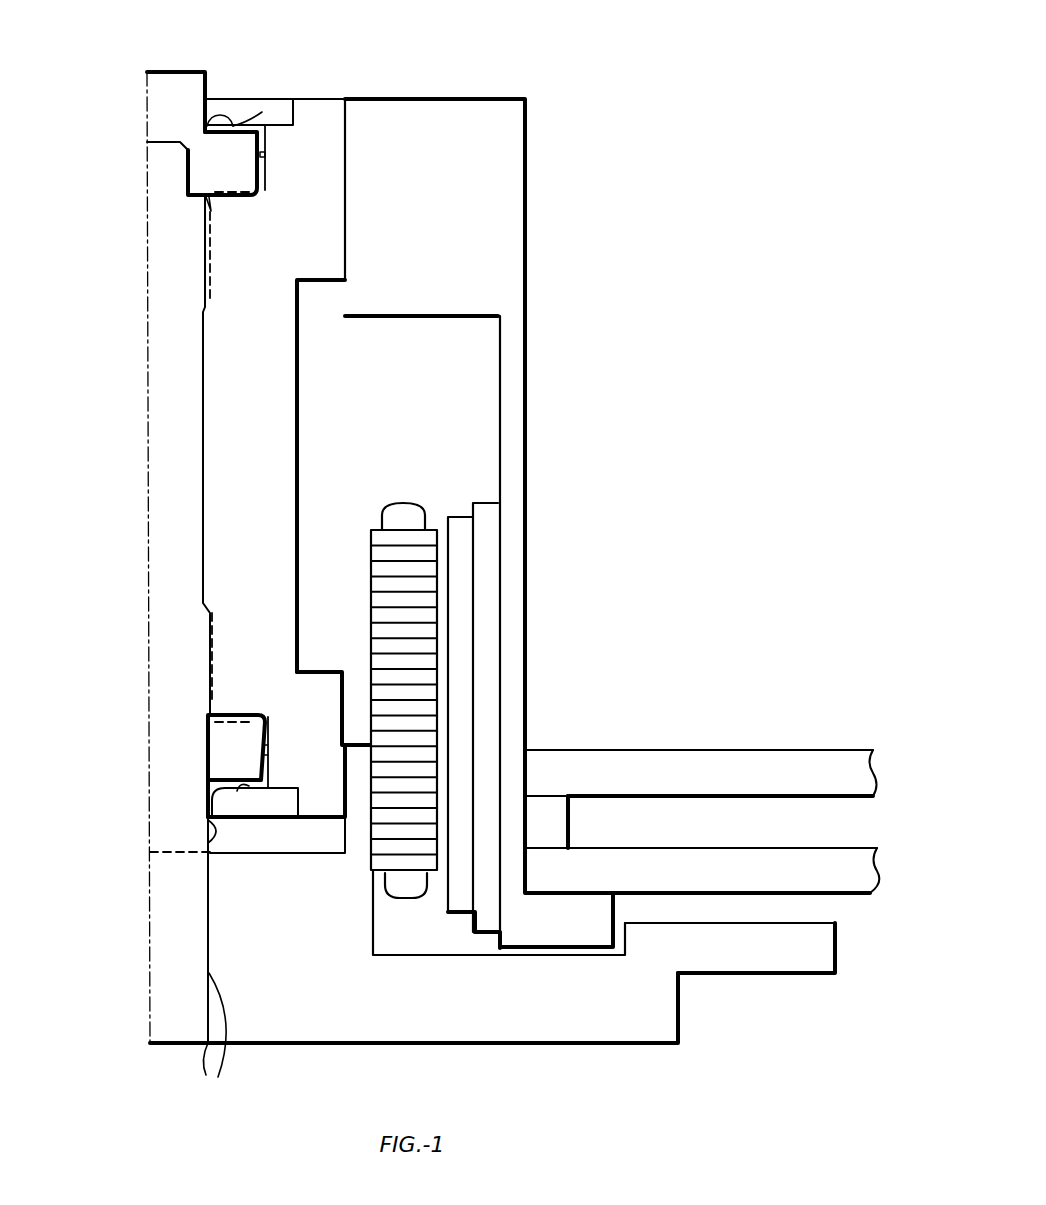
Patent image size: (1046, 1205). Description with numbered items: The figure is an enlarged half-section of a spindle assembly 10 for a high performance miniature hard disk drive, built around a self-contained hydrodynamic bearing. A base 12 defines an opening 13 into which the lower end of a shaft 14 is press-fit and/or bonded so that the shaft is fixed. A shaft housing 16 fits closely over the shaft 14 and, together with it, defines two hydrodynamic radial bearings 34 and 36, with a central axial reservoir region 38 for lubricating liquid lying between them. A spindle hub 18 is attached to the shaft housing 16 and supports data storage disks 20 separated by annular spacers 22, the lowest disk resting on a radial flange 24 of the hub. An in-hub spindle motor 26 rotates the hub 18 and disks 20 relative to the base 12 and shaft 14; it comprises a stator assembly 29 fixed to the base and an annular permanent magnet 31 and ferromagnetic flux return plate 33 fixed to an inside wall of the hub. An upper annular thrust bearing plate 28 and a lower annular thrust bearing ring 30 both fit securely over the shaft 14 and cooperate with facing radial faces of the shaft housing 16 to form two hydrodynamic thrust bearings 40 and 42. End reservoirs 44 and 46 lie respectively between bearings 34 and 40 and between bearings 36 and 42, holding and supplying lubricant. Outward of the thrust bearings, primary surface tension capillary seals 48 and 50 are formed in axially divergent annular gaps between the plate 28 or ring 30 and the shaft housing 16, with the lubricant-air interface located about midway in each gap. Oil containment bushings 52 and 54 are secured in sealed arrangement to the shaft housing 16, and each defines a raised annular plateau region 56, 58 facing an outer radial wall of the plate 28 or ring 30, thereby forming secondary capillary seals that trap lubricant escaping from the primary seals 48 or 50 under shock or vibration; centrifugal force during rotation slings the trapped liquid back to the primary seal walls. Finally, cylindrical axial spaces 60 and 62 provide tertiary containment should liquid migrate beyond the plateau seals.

The spindle assembly 10 is at (96, 890).
The base 12 is at (187, 1003).
The opening 13 is at (212, 1038).
The shaft 14 is at (172, 572).
The shaft housing 16 is at (329, 156).
The spindle hub 18 is at (500, 183).
The data storage disks 20 is at (687, 767).
The spacers 22 is at (562, 826).
The radial flange 24 is at (567, 930).
The in-hub spindle motor 26 is at (406, 942).
The upper annular thrust bearing plate 28 is at (168, 101).
The stator assembly 29 is at (407, 510).
The lower annular thrust bearing ring 30 is at (223, 747).
The annular permanent magnet 31 is at (460, 518).
The ferromagnetic flux return plate 33 is at (487, 503).
The hydrodynamic radial bearing 34 is at (180, 243).
The hydrodynamic radial bearing 36 is at (176, 676).
The central axial reservoir region 38 is at (180, 385).
The hydrodynamic thrust bearing 40 is at (241, 212).
The hydrodynamic thrust bearing 42 is at (248, 702).
The end reservoir 44 is at (212, 201).
The end reservoir 46 is at (215, 713).
The primary capillary seal 48 is at (266, 160).
The primary capillary seal 50 is at (268, 750).
The oil containment bushing 52 is at (233, 113).
The oil containment bushing 54 is at (232, 807).
The raised annular plateau region 56 is at (238, 128).
The raised annular plateau region 58 is at (245, 790).
The cylindrical axial space 60 is at (208, 94).
The cylindrical axial space 62 is at (210, 842).